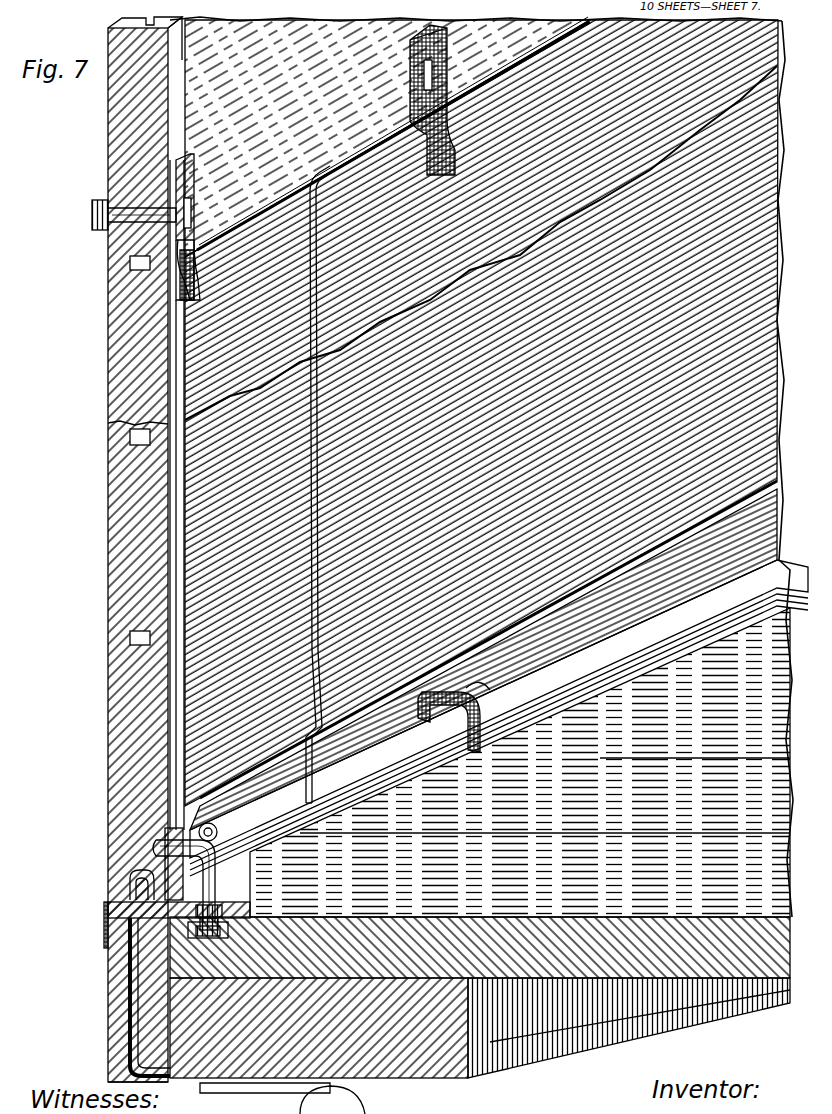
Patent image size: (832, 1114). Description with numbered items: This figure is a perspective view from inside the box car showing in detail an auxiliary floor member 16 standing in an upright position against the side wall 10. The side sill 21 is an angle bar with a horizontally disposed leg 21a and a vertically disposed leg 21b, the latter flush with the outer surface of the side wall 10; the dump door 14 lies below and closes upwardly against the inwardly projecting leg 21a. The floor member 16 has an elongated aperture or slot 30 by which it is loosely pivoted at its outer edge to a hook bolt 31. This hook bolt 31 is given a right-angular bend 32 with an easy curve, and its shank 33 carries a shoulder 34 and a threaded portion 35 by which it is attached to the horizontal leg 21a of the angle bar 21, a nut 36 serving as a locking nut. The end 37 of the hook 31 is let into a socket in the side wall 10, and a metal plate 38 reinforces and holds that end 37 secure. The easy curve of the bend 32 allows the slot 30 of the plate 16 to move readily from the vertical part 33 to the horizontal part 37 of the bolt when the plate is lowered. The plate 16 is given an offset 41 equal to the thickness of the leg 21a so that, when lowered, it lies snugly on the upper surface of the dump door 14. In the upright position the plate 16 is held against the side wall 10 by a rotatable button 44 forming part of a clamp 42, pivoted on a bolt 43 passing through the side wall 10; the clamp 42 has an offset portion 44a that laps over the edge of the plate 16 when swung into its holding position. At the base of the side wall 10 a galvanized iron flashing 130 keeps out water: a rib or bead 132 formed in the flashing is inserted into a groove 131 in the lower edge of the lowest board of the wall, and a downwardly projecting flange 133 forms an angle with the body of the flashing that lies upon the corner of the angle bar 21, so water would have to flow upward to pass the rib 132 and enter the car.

The side wall 10 is at (107, 345).
The dump door 14 is at (480, 947).
The auxiliary floor member 16 is at (477, 411).
The side sill 21 is at (128, 972).
The horizontally disposed leg 21a is at (262, 904).
The vertically disposed leg 21b is at (126, 1028).
The elongated aperture 30 is at (482, 690).
The hook bolt 31 is at (160, 860).
The bend 32 is at (340, 846).
The shank 33 is at (224, 874).
The shoulder 34 is at (222, 896).
The threaded portion 35 is at (232, 932).
The nut 36 is at (480, 1036).
The end of the hook 37 is at (165, 878).
The metal plate 38 is at (162, 843).
The offset 41 is at (256, 760).
The clamp 42 is at (194, 180).
The bolt 43 is at (98, 232).
The button 44 is at (200, 290).
The offset portion 44a is at (412, 124).
The galvanized iron flashing 130 is at (108, 912).
The groove 131 is at (138, 878).
The rib 132 is at (134, 900).
The downwardly projecting flange 133 is at (106, 940).